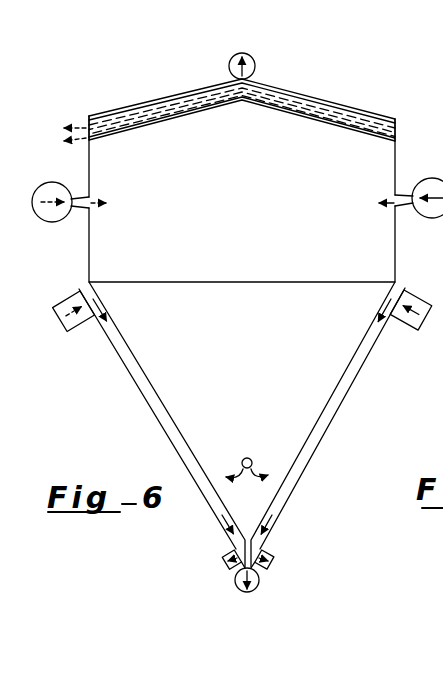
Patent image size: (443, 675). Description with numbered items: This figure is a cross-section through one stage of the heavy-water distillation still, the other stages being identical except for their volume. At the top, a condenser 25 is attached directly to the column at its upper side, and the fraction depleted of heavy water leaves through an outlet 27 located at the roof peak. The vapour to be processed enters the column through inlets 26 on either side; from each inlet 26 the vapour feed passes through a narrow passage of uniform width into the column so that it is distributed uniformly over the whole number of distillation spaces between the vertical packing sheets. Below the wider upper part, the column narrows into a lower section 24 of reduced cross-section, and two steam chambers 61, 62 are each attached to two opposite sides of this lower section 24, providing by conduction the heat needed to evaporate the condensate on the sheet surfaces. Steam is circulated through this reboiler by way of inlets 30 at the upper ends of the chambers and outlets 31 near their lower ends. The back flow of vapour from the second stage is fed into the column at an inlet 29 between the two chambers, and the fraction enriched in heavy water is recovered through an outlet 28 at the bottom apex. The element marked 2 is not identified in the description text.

The roof 2 is at (173, 96).
The lower section of the column 24 is at (242, 424).
The condenser 25 is at (396, 133).
The inlets 26 is at (53, 222).
The outlet 27 is at (255, 68).
The outlet 28 is at (259, 582).
The inlet 29 is at (252, 462).
The inlets 30 is at (67, 332).
The outlets 31 is at (223, 557).
The steam chamber 61 is at (133, 377).
The steam chamber 62 is at (354, 381).